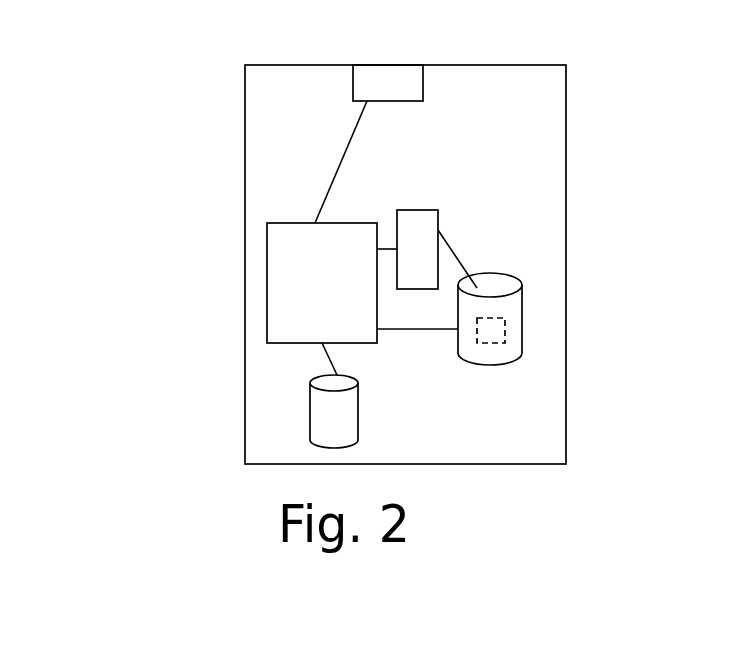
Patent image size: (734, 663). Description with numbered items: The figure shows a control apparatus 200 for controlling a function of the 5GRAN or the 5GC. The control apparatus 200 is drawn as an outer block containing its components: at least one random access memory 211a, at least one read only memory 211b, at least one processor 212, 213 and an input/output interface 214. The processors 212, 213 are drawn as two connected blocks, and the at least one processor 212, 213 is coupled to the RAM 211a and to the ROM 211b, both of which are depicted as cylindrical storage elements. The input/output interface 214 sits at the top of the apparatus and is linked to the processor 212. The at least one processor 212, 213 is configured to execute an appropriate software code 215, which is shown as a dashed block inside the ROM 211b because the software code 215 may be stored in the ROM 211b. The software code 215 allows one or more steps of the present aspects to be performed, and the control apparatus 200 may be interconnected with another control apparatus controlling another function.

The control apparatus 200 is at (236, 62).
The random access memory (RAM) 211a is at (309, 408).
The read only memory (ROM) 211b is at (522, 350).
The processor 212 is at (267, 307).
The processor 213 is at (407, 228).
The input/output interface 214 is at (392, 85).
The software code 215 is at (504, 322).